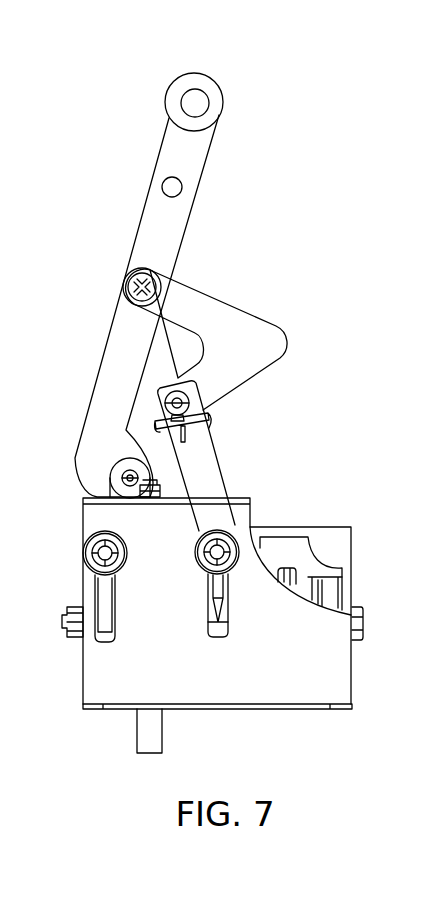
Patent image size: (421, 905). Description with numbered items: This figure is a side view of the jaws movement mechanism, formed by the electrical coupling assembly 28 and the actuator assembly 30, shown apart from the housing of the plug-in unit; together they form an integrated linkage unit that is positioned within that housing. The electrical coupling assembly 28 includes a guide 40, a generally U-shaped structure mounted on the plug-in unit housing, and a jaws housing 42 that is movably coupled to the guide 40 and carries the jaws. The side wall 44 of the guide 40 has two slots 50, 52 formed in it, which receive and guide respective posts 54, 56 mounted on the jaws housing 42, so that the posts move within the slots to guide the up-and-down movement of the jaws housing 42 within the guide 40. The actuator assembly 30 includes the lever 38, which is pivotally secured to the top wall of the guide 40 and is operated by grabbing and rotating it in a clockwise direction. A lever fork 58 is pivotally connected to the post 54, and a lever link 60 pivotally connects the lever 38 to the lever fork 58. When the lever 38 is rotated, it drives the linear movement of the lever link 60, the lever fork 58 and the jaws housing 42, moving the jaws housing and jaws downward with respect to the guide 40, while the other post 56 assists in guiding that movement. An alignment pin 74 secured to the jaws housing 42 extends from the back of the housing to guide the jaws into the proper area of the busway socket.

The electrical coupling assembly 28 is at (295, 742).
The actuator assembly 30 is at (246, 79).
The lever 38 is at (190, 153).
The guide 40 is at (352, 677).
The jaws housing 42 is at (340, 535).
The side wall 44 is at (145, 657).
The slot 50 is at (218, 637).
The slot 52 is at (100, 607).
The post 54 is at (226, 542).
The post 56 is at (100, 552).
The lever fork 58 is at (197, 457).
The lever link 60 is at (265, 345).
The alignment pin 74 is at (145, 733).